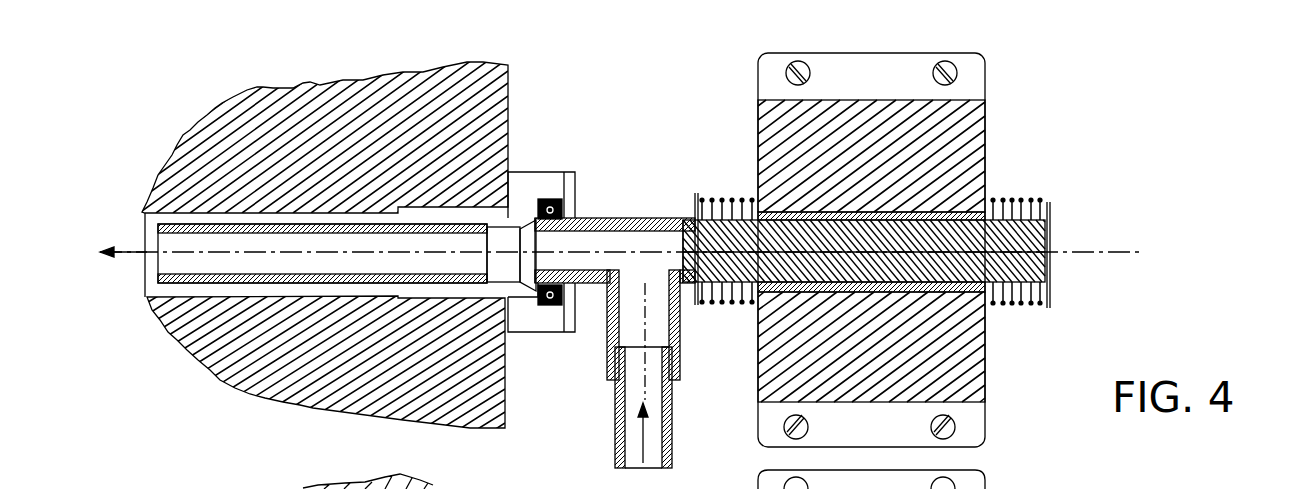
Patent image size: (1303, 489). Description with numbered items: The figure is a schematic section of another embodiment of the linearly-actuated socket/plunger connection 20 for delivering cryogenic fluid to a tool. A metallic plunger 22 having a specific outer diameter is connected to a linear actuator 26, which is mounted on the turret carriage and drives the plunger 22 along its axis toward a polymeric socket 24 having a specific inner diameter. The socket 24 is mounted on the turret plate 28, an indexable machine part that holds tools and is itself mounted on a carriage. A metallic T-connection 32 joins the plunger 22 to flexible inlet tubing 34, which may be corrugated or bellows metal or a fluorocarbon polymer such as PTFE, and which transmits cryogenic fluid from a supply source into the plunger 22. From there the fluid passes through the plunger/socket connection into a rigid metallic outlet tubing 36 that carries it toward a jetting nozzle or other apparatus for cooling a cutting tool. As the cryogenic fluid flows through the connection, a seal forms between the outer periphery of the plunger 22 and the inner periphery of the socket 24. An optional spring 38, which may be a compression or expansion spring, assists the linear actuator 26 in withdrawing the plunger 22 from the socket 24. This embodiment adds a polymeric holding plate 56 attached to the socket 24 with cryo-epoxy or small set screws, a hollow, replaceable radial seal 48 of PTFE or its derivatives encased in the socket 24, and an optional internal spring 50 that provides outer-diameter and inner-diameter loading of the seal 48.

The linearly-actuated socket/plunger connection 20 is at (1157, 168).
The metallic plunger 22 is at (660, 220).
The polymeric socket 24 is at (530, 187).
The linear actuator 26 is at (977, 135).
The turret plate 28 is at (287, 98).
The T-connection 32 is at (683, 338).
The inlet tubing 34 is at (670, 432).
The outlet tubing 36 is at (143, 230).
The spring 38 is at (1032, 198).
The radial seal 48 is at (552, 308).
The internal spring 50 is at (560, 206).
The holding plate 56 is at (572, 185).